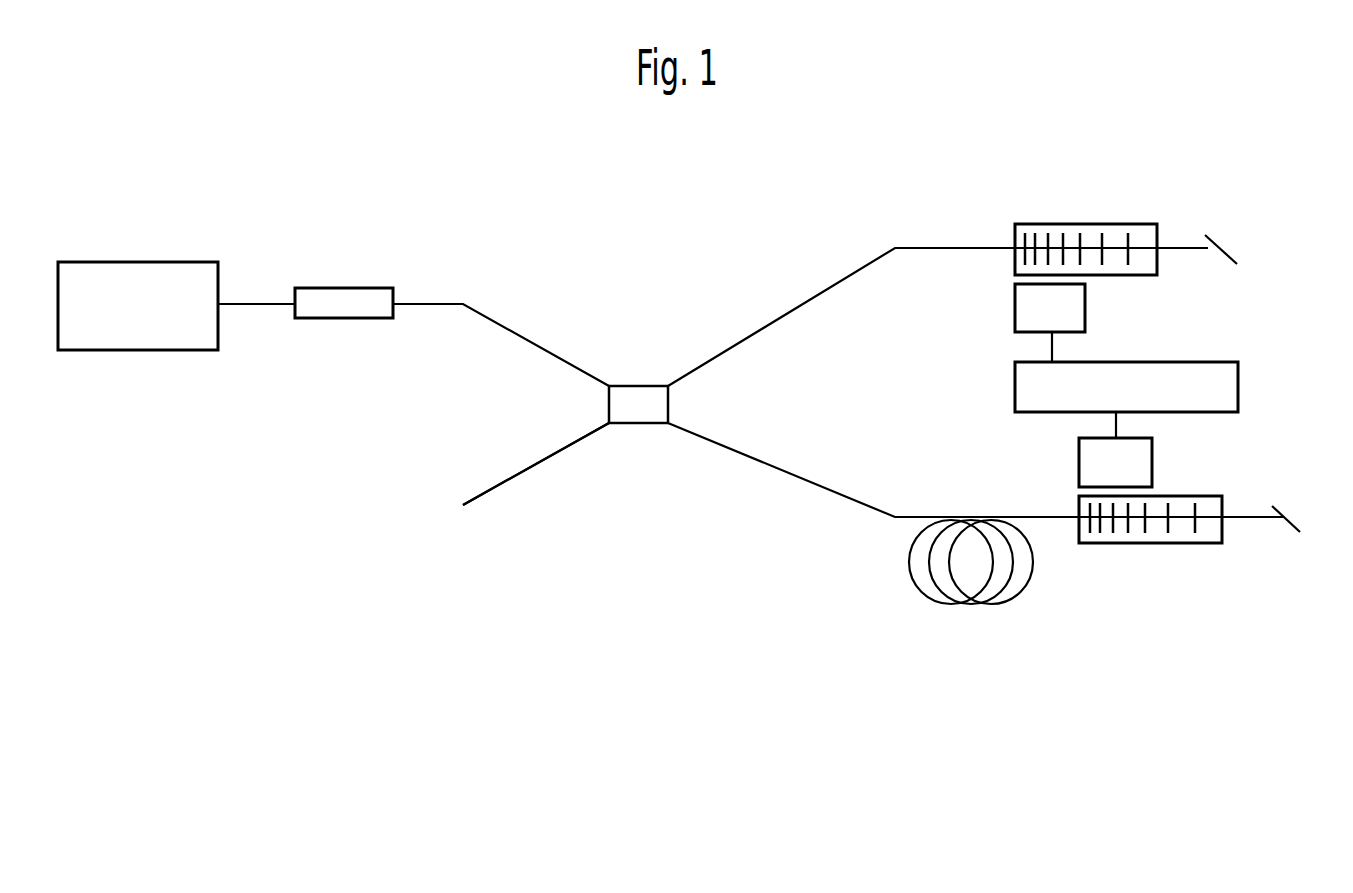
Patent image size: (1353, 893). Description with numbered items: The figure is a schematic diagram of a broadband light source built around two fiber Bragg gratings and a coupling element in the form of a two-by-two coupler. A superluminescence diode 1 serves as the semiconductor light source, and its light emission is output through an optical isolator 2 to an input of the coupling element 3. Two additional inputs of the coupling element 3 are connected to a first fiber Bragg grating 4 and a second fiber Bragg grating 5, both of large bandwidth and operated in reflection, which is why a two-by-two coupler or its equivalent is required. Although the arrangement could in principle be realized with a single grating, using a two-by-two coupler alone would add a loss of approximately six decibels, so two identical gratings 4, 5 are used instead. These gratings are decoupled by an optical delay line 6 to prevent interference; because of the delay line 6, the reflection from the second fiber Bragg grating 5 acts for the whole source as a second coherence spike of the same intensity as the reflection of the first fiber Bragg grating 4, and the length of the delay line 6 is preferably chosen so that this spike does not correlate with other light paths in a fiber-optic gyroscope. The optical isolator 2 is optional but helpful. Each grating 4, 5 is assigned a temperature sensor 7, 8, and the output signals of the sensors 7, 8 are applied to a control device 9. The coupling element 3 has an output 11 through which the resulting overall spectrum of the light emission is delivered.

The superluminescence diode 1 is at (155, 262).
The optical isolator 2 is at (355, 288).
The coupling element 3 is at (627, 386).
The first fiber Bragg grating 4 is at (1055, 224).
The second fiber Bragg grating 5 is at (1138, 543).
The optical delay line 6 is at (960, 605).
The temperature sensor 7 is at (1085, 308).
The temperature sensor 8 is at (1152, 455).
The control device 9 is at (1238, 385).
The output 11 is at (515, 478).